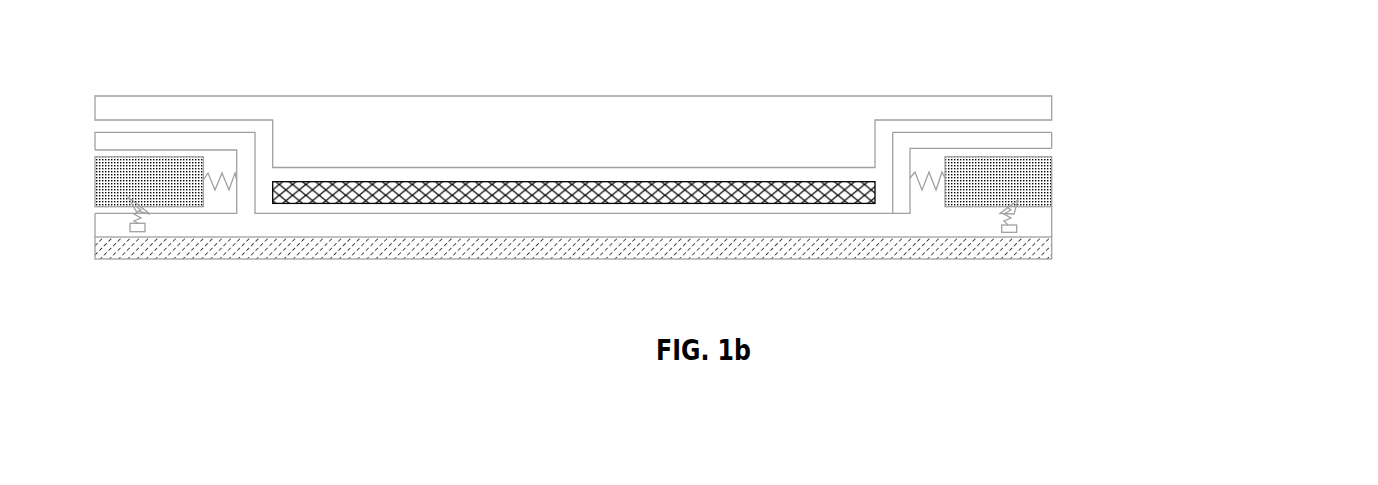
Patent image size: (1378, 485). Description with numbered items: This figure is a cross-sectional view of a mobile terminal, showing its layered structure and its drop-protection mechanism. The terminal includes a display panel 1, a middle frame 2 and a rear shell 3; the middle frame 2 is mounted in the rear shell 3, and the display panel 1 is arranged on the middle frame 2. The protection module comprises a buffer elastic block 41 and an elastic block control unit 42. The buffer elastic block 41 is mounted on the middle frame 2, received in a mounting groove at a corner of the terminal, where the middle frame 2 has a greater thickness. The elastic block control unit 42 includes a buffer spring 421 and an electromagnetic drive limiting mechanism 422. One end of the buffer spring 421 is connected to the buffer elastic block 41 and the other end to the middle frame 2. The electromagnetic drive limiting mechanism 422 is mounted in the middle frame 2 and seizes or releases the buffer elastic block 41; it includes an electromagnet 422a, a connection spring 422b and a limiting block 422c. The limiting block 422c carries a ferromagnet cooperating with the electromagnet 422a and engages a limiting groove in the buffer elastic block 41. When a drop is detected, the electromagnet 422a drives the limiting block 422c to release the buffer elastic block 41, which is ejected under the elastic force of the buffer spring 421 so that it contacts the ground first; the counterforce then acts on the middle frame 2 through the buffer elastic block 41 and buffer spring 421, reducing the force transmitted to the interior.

The display panel 1 is at (1045, 108).
The middle frame 2 is at (1045, 142).
The rear shell 3 is at (1022, 259).
The buffer elastic block 41 is at (1045, 155).
The elastic block control unit 42 is at (750, 214).
The buffer spring 421 is at (945, 178).
The electromagnetic drive limiting mechanism 422 is at (713, 222).
The electromagnet 422a is at (1018, 201).
The connection spring 422b is at (1018, 218).
The limiting block 422c is at (1013, 233).